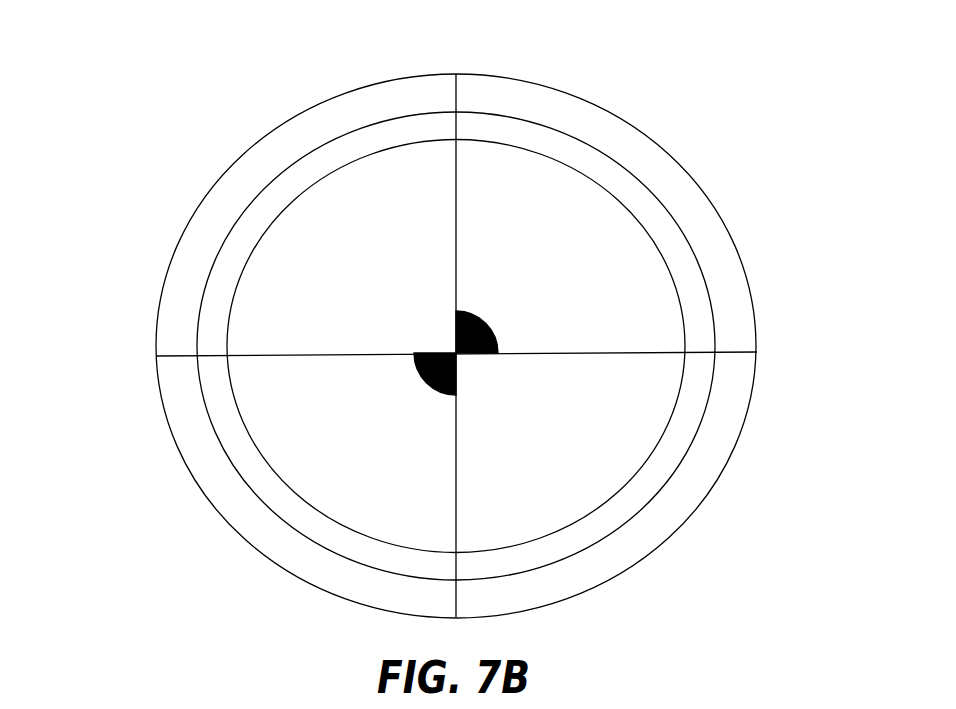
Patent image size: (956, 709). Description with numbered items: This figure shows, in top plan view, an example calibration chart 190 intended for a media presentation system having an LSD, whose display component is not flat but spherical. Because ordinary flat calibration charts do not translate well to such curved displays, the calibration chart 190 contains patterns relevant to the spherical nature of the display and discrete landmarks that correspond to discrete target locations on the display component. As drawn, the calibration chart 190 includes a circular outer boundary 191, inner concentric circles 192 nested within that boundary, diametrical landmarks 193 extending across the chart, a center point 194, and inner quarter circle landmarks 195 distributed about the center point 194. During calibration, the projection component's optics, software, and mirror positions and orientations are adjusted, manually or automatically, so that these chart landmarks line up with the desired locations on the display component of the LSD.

The calibration chart 190 is at (167, 96).
The outer boundary 191 is at (687, 168).
The inner concentric circles 192 is at (353, 158).
The diametrical landmarks 193 is at (456, 247).
The center point 194 is at (460, 356).
The inner quarter circle landmarks 195 is at (420, 378).